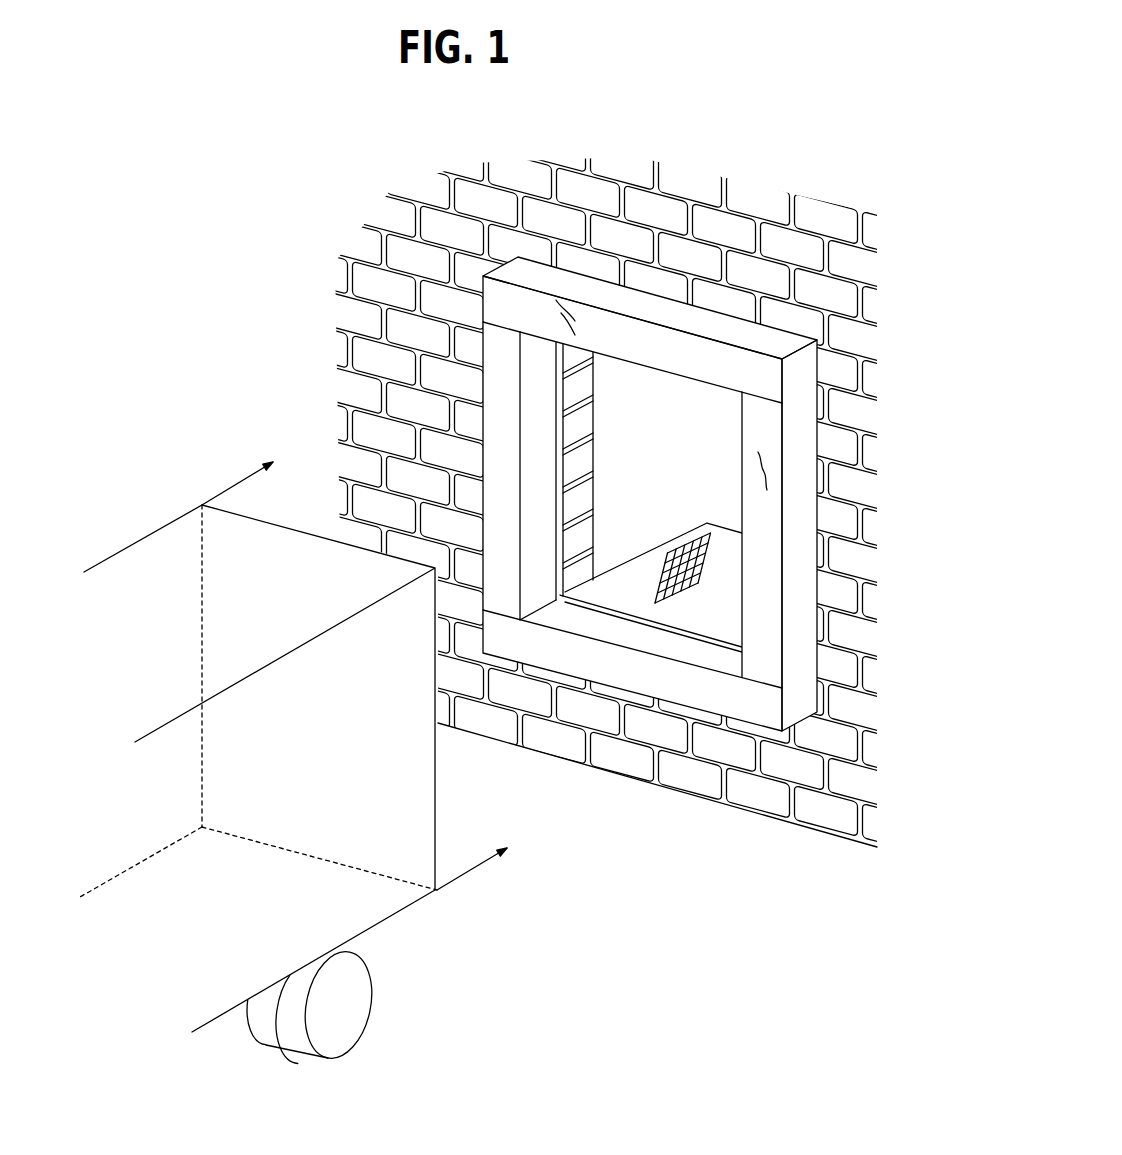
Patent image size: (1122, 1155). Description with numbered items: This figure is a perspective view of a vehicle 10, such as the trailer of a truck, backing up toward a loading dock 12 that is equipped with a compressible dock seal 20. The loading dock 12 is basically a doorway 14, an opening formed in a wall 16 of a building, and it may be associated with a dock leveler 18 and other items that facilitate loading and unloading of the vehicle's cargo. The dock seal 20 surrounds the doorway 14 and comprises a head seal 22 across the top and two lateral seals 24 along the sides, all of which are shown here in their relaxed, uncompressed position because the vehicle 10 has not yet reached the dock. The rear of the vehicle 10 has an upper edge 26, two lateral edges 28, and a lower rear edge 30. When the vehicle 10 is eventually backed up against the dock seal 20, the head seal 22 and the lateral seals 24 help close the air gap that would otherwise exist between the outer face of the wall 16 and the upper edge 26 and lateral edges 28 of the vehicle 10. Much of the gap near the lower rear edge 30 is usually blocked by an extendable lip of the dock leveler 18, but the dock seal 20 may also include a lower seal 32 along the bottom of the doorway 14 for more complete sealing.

The vehicle 10 is at (293, 755).
The loading dock 12 is at (195, 290).
The doorway 14 is at (687, 443).
The wall 16 is at (760, 792).
The dock leveler 18 is at (637, 585).
The dock seal 20 is at (447, 368).
The head seal 22 is at (666, 318).
The lateral seals 24 is at (500, 436).
The upper edge 26 is at (255, 516).
The lateral edges 28 is at (197, 597).
The lower rear edge 30 is at (332, 860).
The lower seal 32 is at (648, 678).